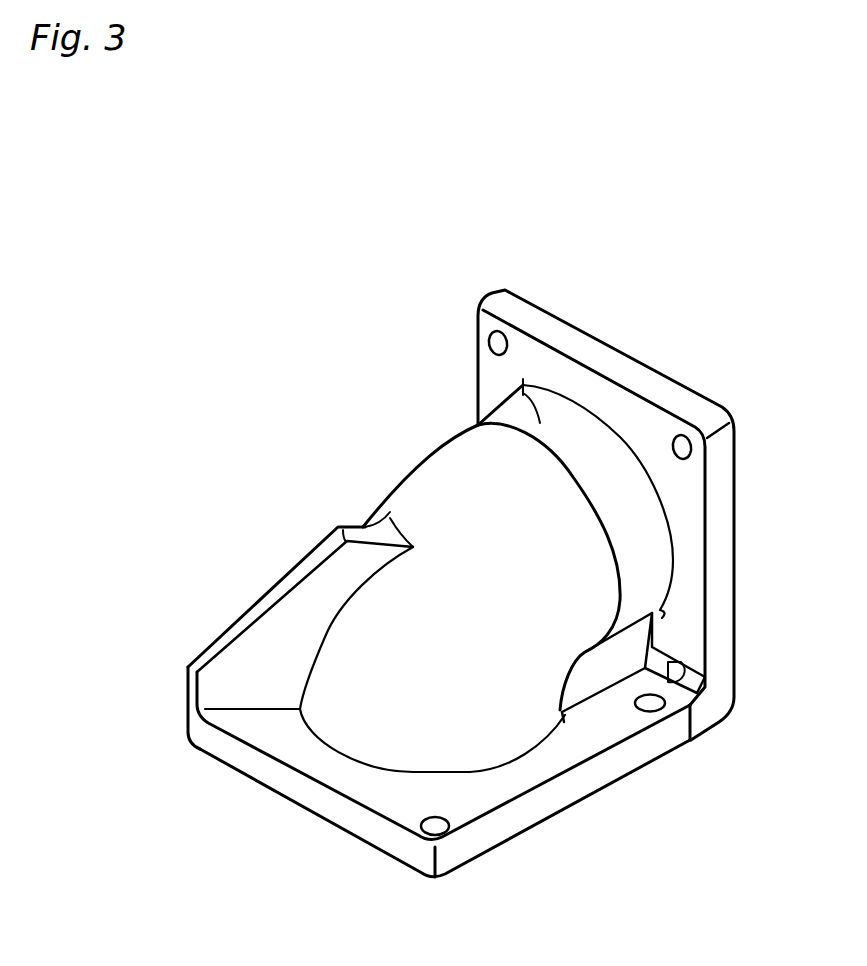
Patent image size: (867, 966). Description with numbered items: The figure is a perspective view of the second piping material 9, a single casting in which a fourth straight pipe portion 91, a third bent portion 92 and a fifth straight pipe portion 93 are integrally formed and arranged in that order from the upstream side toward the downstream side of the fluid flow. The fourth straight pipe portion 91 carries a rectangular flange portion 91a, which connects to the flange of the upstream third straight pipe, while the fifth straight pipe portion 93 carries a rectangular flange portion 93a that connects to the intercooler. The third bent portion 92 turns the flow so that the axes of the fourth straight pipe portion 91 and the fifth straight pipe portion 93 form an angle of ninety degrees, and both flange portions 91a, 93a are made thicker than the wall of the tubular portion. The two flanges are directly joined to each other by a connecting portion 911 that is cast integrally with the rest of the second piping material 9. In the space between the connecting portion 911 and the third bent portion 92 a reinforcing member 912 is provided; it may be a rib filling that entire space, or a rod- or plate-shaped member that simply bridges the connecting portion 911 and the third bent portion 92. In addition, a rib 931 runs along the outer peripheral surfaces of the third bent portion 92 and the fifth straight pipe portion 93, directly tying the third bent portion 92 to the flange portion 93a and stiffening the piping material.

The second piping material 9 is at (366, 428).
The fourth straight pipe portion 91 is at (522, 395).
The flange portion 91a is at (683, 407).
The third bent portion 92 is at (430, 508).
The fifth straight pipe portion 93 is at (373, 708).
The rib 931 is at (243, 668).
The flange portion 93a is at (573, 788).
The connecting portion 911 is at (660, 708).
The reinforcing member 912 is at (607, 672).